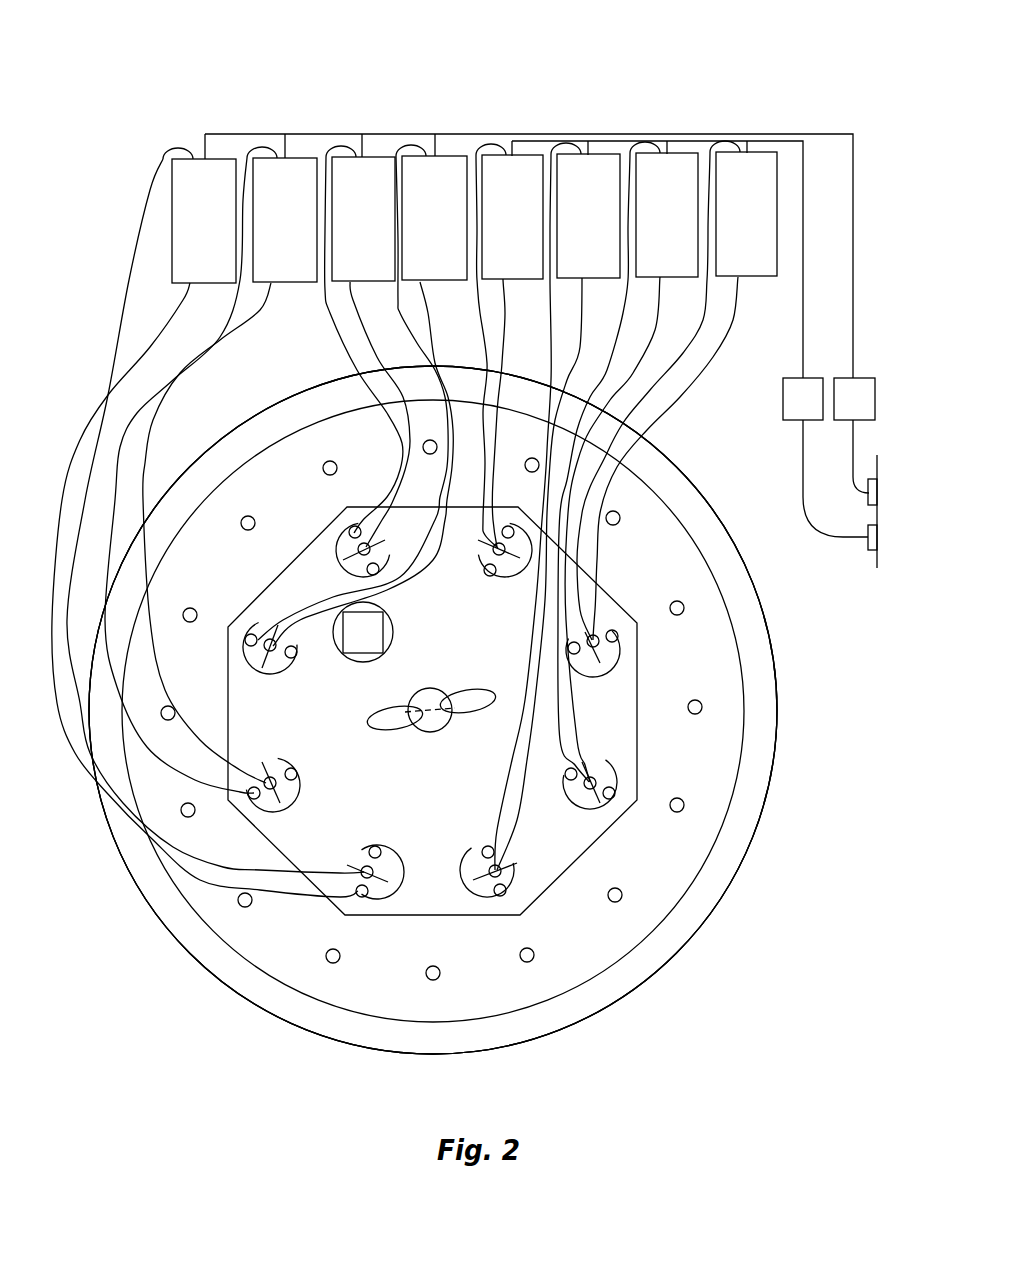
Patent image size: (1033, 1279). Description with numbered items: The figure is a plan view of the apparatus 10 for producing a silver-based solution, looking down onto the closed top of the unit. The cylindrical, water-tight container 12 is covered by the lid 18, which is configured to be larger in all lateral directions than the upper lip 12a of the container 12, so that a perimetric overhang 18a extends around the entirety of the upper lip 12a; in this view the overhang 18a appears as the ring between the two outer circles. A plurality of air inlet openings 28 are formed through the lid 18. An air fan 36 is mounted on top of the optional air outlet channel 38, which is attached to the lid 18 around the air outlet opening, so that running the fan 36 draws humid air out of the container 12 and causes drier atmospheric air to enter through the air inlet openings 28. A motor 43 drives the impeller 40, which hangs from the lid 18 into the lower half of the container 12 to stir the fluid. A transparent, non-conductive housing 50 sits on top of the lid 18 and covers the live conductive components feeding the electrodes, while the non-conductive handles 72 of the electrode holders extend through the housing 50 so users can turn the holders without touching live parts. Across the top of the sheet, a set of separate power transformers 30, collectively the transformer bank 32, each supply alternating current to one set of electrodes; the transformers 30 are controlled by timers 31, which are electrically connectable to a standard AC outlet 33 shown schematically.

The apparatus 10 is at (98, 246).
The container 12 is at (672, 912).
The upper lip 12a is at (433, 710).
The lid 18 is at (713, 762).
The perimetric overhang 18a is at (733, 840).
The air inlet openings 28 is at (428, 976).
The power transformer 30 is at (474, 217).
The timer 31 is at (829, 457).
The transformer bank 32 is at (580, 108).
The AC outlet 33 is at (872, 478).
The air fan 36 is at (363, 632).
The air outlet channel 38 is at (392, 626).
The impeller 40 is at (405, 728).
The motor 43 is at (446, 690).
The non-conductive housing 50 is at (640, 708).
The non-conductive handles 72 is at (507, 890).